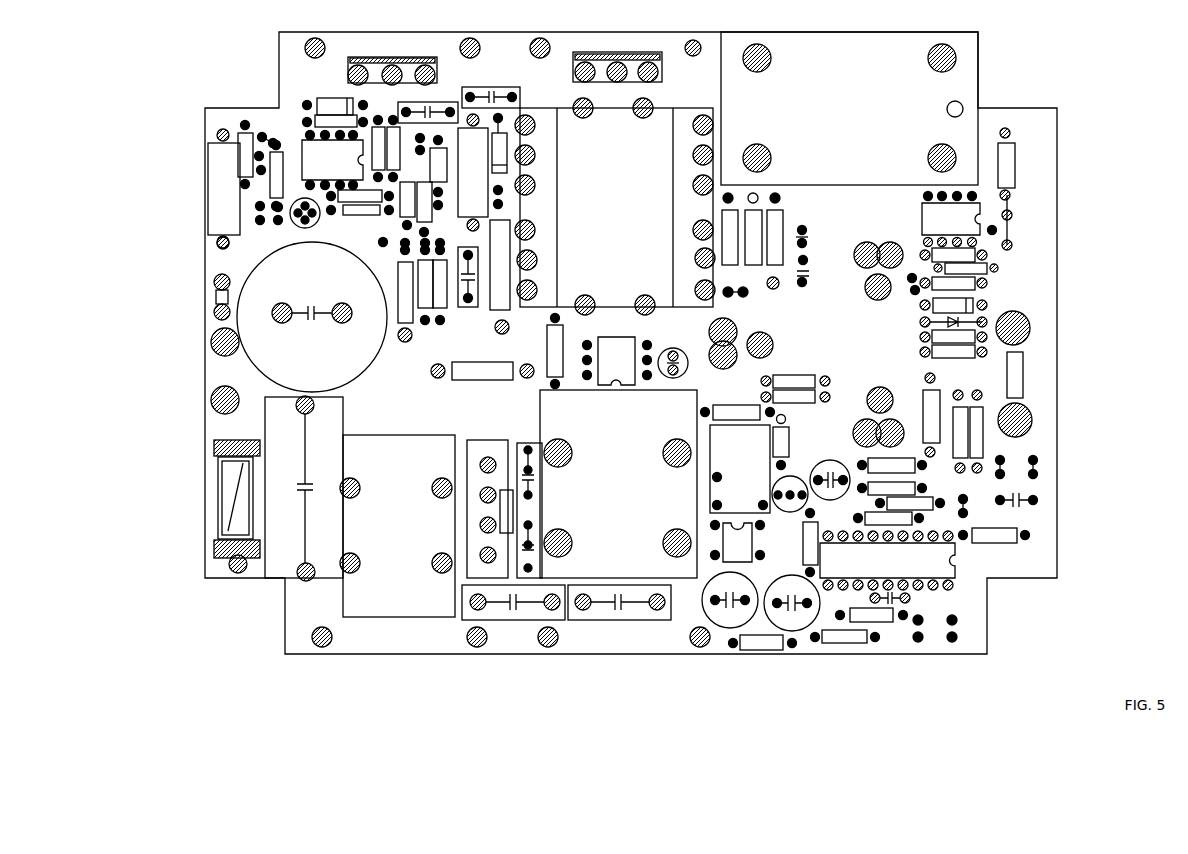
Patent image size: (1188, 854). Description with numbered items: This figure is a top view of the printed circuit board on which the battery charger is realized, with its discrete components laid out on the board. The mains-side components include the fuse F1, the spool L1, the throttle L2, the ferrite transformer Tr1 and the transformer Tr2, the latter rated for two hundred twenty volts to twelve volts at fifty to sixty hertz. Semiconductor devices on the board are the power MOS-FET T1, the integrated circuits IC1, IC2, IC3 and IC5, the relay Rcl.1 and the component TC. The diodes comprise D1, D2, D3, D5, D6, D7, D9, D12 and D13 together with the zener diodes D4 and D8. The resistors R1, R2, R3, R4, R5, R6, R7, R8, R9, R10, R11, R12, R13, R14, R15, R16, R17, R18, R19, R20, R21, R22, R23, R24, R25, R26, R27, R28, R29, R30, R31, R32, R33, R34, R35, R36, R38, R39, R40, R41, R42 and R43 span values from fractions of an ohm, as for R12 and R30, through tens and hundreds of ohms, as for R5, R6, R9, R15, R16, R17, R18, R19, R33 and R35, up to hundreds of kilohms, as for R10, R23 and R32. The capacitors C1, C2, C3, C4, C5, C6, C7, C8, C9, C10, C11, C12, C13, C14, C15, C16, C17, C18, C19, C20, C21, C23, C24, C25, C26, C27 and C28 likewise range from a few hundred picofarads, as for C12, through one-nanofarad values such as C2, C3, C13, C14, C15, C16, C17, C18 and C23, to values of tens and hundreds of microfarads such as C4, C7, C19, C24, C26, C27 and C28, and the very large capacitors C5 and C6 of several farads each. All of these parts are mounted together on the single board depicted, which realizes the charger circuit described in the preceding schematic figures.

The power MOS-FET T1 is at (392, 61).
The diode D7 is at (617, 58).
The throttle L2 is at (849, 108).
The ferrite transformer Tr1 is at (615, 206).
The transformer Tr2 is at (618, 484).
The spool L1 is at (397, 526).
The fuse F1 is at (237, 506).
The capacitor C1 is at (304, 488).
The capacitor C2 is at (524, 431).
The capacitor C3 is at (532, 556).
The capacitor C4 is at (312, 317).
The capacitor C5 is at (513, 602).
The capacitor C6 is at (619, 602).
The capacitor C7 is at (315, 216).
The capacitor C8 is at (400, 241).
The capacitor C9 is at (413, 142).
The capacitor C10 is at (271, 144).
The capacitor C11 is at (265, 222).
The capacitor C12 is at (253, 212).
The capacitor C13 is at (471, 286).
The capacitor C14 is at (491, 88).
The capacitor C15 is at (428, 103).
The capacitor C16 is at (806, 227).
The capacitor C17 is at (737, 299).
The capacitor C18 is at (805, 282).
The capacitor C19 is at (792, 603).
The capacitor C20 is at (1004, 459).
The capacitor C21 is at (1026, 506).
The capacitor C23 is at (905, 598).
The capacitor C24 is at (966, 498).
The capacitor C25 is at (904, 292).
The capacitor C26 is at (880, 542).
The capacitor C27 is at (830, 472).
The capacitor C28 is at (675, 354).
The resistor R1 is at (393, 149).
The resistor R2 is at (440, 285).
The resistor R3 is at (555, 351).
The resistor R4 is at (276, 176).
The resistor R5 is at (360, 197).
The resistor R6 is at (378, 149).
The resistor R7 is at (335, 121).
The resistor R8 is at (245, 155).
The resistor R9 is at (430, 209).
The resistor R10 is at (521, 510).
The resistor R11 is at (405, 294).
The resistor R12 is at (224, 188).
The resistor R13 is at (500, 277).
The resistor R14 is at (473, 172).
The resistor R15 is at (227, 287).
The resistor R16 is at (775, 241).
The resistor R17 is at (730, 229).
The resistor R18 is at (753, 229).
The resistor R19 is at (763, 643).
The resistor R20 is at (845, 637).
The resistor R21 is at (910, 503).
The resistor R22 is at (889, 518).
The resistor R23 is at (872, 615).
The resistor R24 is at (892, 466).
The resistor R25 is at (810, 543).
The resistor R26 is at (892, 488).
The resistor R27 is at (960, 431).
The resistor R28 is at (953, 351).
The resistor R29 is at (976, 431).
The resistor R30 is at (1015, 375).
The resistor R31 is at (931, 415).
The resistor R32 is at (953, 255).
The resistor R33 is at (1006, 189).
The resistor R34 is at (953, 283).
The resistor R35 is at (966, 269).
The resistor R36 is at (953, 336).
The resistor R38 is at (425, 285).
The resistor R39 is at (795, 381).
The resistor R40 is at (795, 396).
The resistor R41 is at (738, 413).
The resistor R42 is at (994, 536).
The resistor R43 is at (482, 371).
The diode D1 is at (738, 542).
The diode D2 is at (407, 206).
The diode D3 is at (360, 210).
The z-diode D4 is at (335, 106).
The diode D5 is at (499, 161).
The diode D6 is at (438, 166).
The z-diode D8 is at (942, 319).
The diode D9 is at (953, 306).
The diode D12 is at (487, 500).
The diode D13 is at (781, 442).
The integrated circuit IC1 is at (332, 160).
The integrated circuit IC2 is at (887, 560).
The integrated circuit IC3 is at (959, 219).
The integrated circuit IC5 is at (617, 361).
The relay Rcl.1 is at (740, 469).
The transistor TC is at (790, 495).